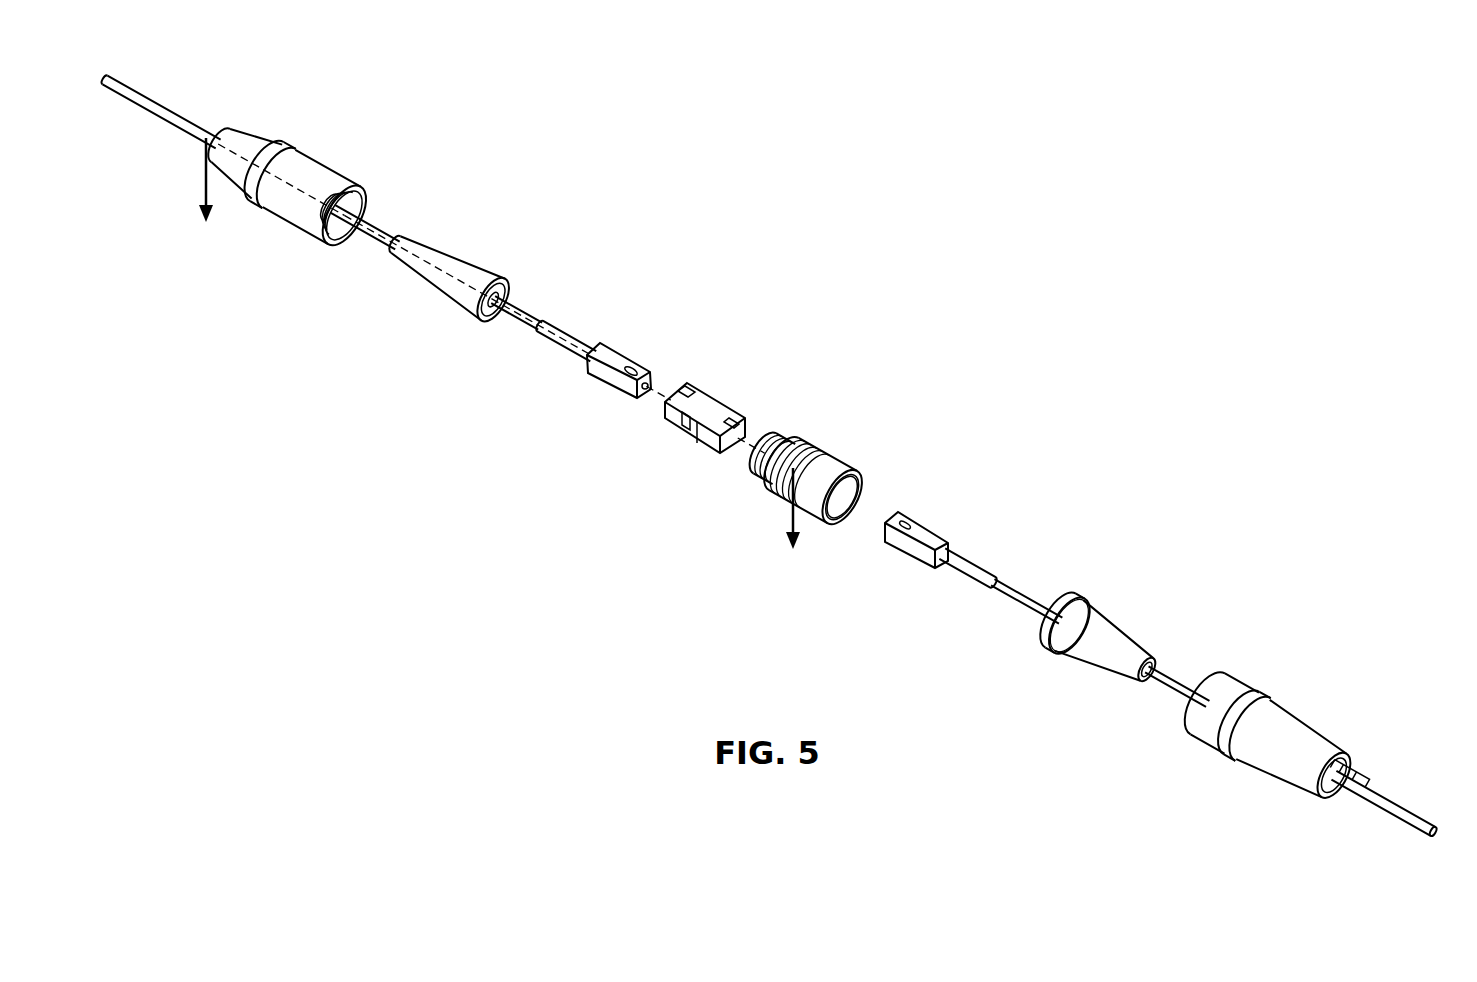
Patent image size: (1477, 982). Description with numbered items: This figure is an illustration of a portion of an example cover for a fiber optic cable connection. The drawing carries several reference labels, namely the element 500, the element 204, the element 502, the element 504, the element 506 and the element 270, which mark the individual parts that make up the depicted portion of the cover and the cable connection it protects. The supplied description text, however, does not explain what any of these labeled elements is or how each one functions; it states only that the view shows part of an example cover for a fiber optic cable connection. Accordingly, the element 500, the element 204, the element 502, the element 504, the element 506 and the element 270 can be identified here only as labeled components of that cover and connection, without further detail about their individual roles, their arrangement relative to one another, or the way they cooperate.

The connector assembly 500 is at (1028, 90).
The cable 204 is at (143, 97).
The boot 502 is at (320, 170).
The fiber cable 504 is at (370, 230).
The threaded bore 506 is at (353, 233).
The threaded coupling nut 270 is at (812, 443).